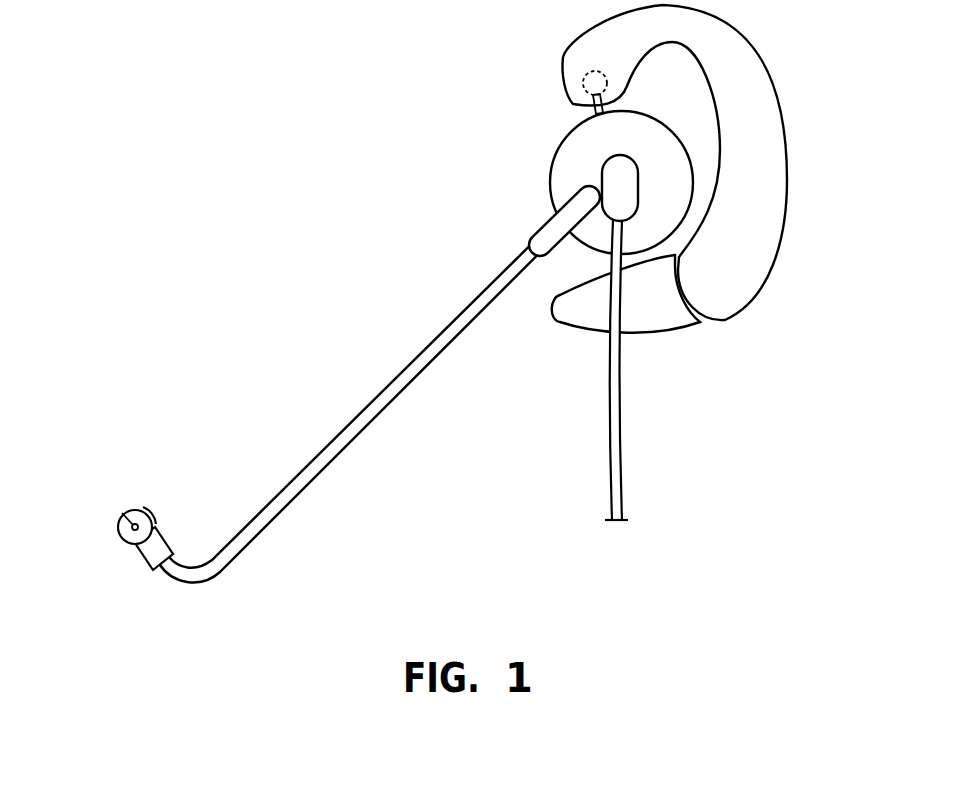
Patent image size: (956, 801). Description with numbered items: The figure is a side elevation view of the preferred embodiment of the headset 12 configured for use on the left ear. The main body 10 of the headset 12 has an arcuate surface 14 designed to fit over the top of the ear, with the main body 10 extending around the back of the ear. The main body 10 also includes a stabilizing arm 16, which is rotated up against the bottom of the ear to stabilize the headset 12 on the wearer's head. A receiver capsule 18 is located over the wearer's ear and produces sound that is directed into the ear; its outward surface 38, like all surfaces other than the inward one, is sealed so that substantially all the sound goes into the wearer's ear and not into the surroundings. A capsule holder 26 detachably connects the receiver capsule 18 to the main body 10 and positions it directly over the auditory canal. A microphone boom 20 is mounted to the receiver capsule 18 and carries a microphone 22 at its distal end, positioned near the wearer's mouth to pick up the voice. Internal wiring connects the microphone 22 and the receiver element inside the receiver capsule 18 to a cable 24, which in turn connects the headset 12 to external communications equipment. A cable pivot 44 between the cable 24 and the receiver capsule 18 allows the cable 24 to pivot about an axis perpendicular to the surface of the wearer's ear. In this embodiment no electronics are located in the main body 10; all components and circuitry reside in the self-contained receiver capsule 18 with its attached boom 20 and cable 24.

The main body 10 is at (453, 297).
The headset 12 is at (713, 162).
The arcuate surface 14 is at (670, 42).
The stabilizing arm 16 is at (664, 316).
The receiver capsule 18 is at (581, 162).
The microphone boom 20 is at (348, 427).
The microphone 22 is at (133, 542).
The cable 24 is at (622, 482).
The capsule holder 26 is at (597, 111).
The outward surface 38 is at (562, 171).
The cable pivot 44 is at (637, 197).